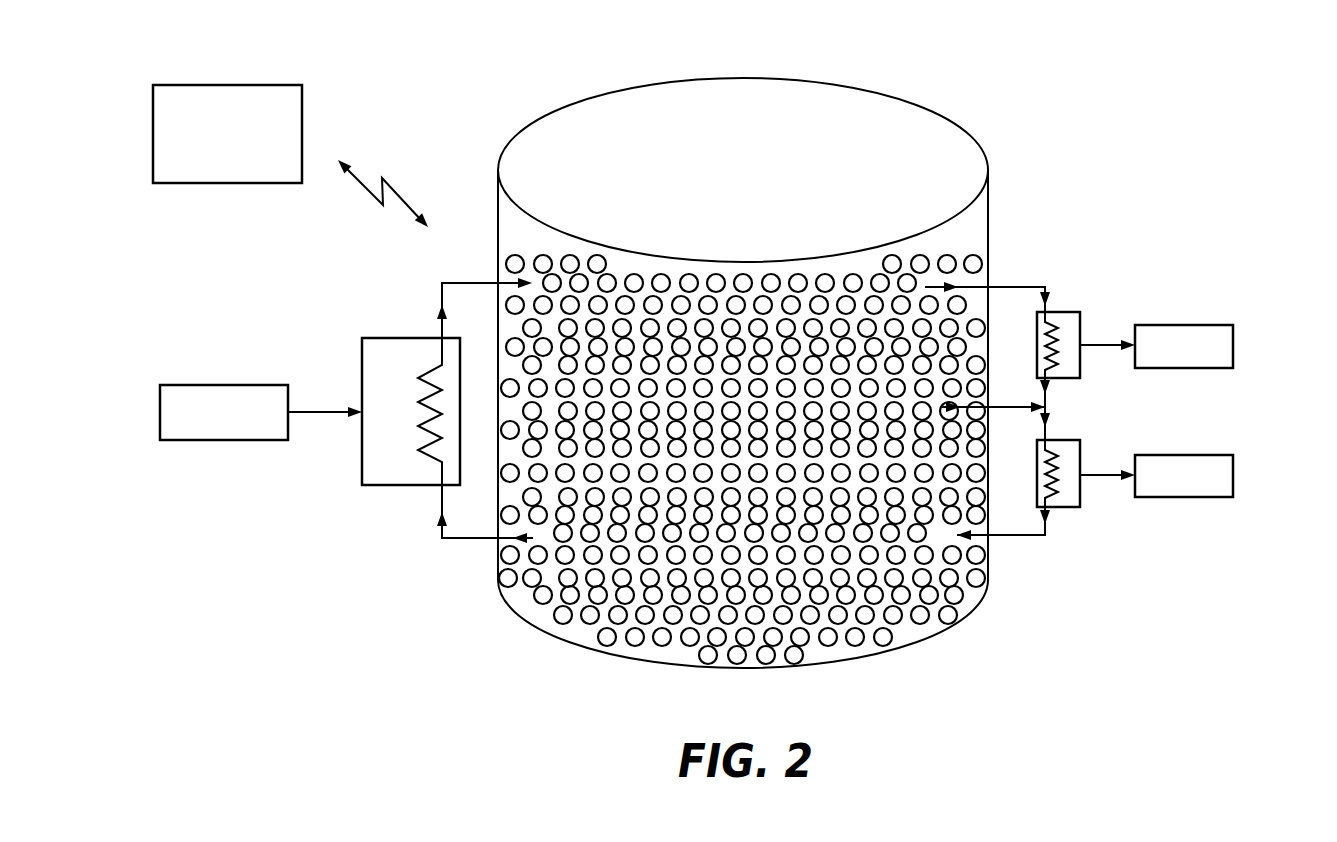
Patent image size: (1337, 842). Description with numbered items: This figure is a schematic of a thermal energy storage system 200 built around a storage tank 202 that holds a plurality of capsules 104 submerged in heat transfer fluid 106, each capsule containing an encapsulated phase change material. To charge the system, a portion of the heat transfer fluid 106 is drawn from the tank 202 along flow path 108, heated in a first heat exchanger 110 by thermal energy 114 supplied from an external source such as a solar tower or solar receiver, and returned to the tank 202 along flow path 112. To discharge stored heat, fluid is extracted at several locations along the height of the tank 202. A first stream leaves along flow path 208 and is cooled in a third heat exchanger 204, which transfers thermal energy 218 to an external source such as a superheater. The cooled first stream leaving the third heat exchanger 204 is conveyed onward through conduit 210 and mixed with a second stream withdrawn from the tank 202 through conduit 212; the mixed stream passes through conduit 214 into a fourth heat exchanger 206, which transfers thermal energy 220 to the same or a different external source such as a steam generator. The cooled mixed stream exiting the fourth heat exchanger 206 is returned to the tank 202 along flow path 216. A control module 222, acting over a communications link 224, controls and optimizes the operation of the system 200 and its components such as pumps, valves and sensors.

The thermal energy storage system 200 is at (1210, 99).
The capsules 104 is at (964, 245).
The heat transfer fluid 106 is at (522, 236).
The storage tank 202 is at (762, 183).
The flow path 108 is at (455, 540).
The first heat exchanger 110 is at (377, 485).
The flow path 112 is at (440, 297).
The thermal energy 114 is at (183, 385).
The third heat exchanger 204 is at (1077, 312).
The fourth heat exchanger 206 is at (1083, 500).
The flow path 208 is at (1020, 287).
The intermediate conduit 210 is at (1047, 393).
The second outlet conduit 212 is at (1005, 408).
The intermediate conduit 214 is at (1047, 437).
The flow path 216 is at (1033, 535).
The thermal energy 218 is at (1207, 325).
The thermal energy 220 is at (1233, 487).
The control module 222 is at (302, 95).
The communications link 224 is at (358, 177).